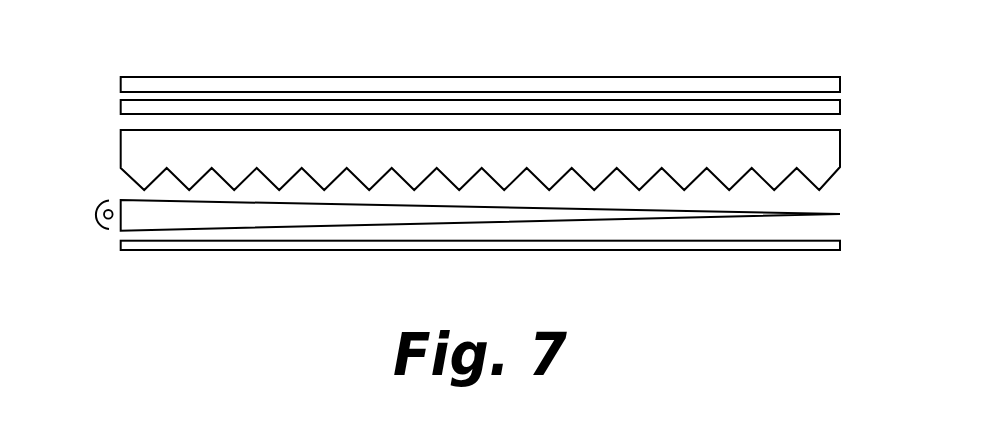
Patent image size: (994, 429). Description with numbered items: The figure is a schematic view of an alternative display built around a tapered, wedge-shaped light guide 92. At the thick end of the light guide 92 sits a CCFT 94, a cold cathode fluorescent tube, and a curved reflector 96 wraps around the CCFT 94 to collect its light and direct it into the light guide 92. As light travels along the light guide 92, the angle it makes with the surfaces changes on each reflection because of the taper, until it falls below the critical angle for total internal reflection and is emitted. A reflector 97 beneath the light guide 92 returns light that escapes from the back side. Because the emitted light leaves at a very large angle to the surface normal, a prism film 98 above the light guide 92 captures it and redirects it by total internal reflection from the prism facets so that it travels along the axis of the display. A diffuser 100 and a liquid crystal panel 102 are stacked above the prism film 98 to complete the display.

The light guide 92 is at (377, 215).
The CCFT 94 is at (106, 204).
The reflector 96 is at (95, 232).
The reflector 97 is at (503, 245).
The prism film 98 is at (828, 158).
The diffuser 100 is at (833, 107).
The liquid crystal panel 102 is at (682, 83).